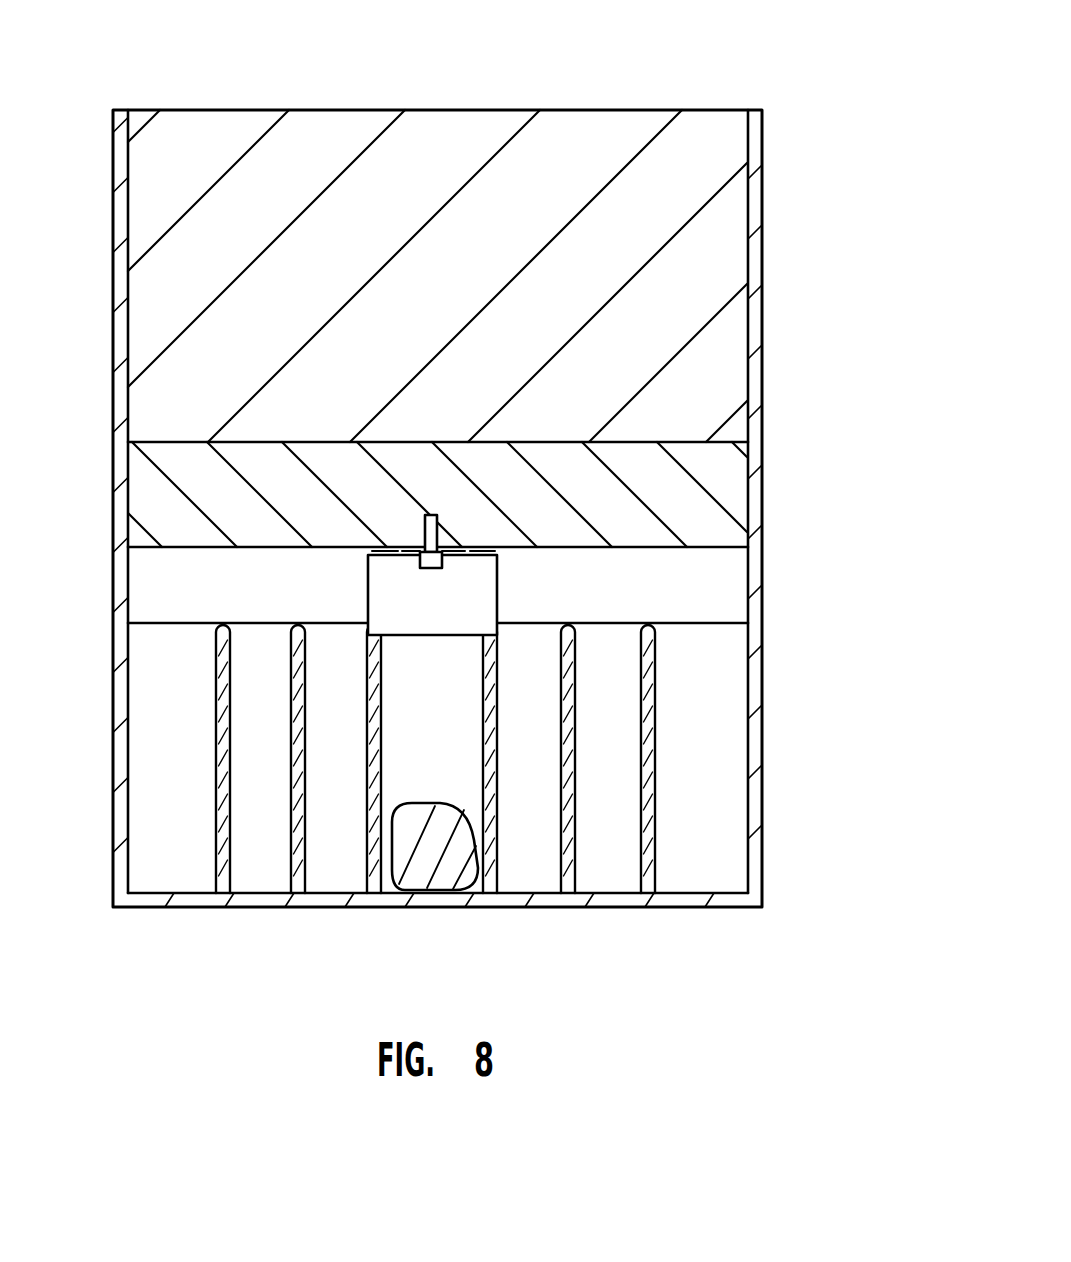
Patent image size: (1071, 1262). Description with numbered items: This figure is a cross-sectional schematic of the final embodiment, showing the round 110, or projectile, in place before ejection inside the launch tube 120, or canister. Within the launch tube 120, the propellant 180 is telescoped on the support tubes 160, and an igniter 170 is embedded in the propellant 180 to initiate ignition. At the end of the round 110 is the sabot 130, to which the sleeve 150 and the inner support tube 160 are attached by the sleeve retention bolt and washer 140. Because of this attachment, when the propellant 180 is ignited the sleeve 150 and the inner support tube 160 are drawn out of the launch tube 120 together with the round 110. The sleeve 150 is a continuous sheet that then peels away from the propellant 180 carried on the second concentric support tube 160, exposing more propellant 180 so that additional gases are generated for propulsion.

The round 110 is at (580, 110).
The launch tube 120 is at (762, 163).
The sabot 130 is at (690, 438).
The sleeve retention bolt and washer 140 is at (442, 562).
The sleeve 150 is at (497, 595).
The support tubes 160 is at (497, 863).
The igniter 170 is at (395, 868).
The propellant 180 is at (640, 738).